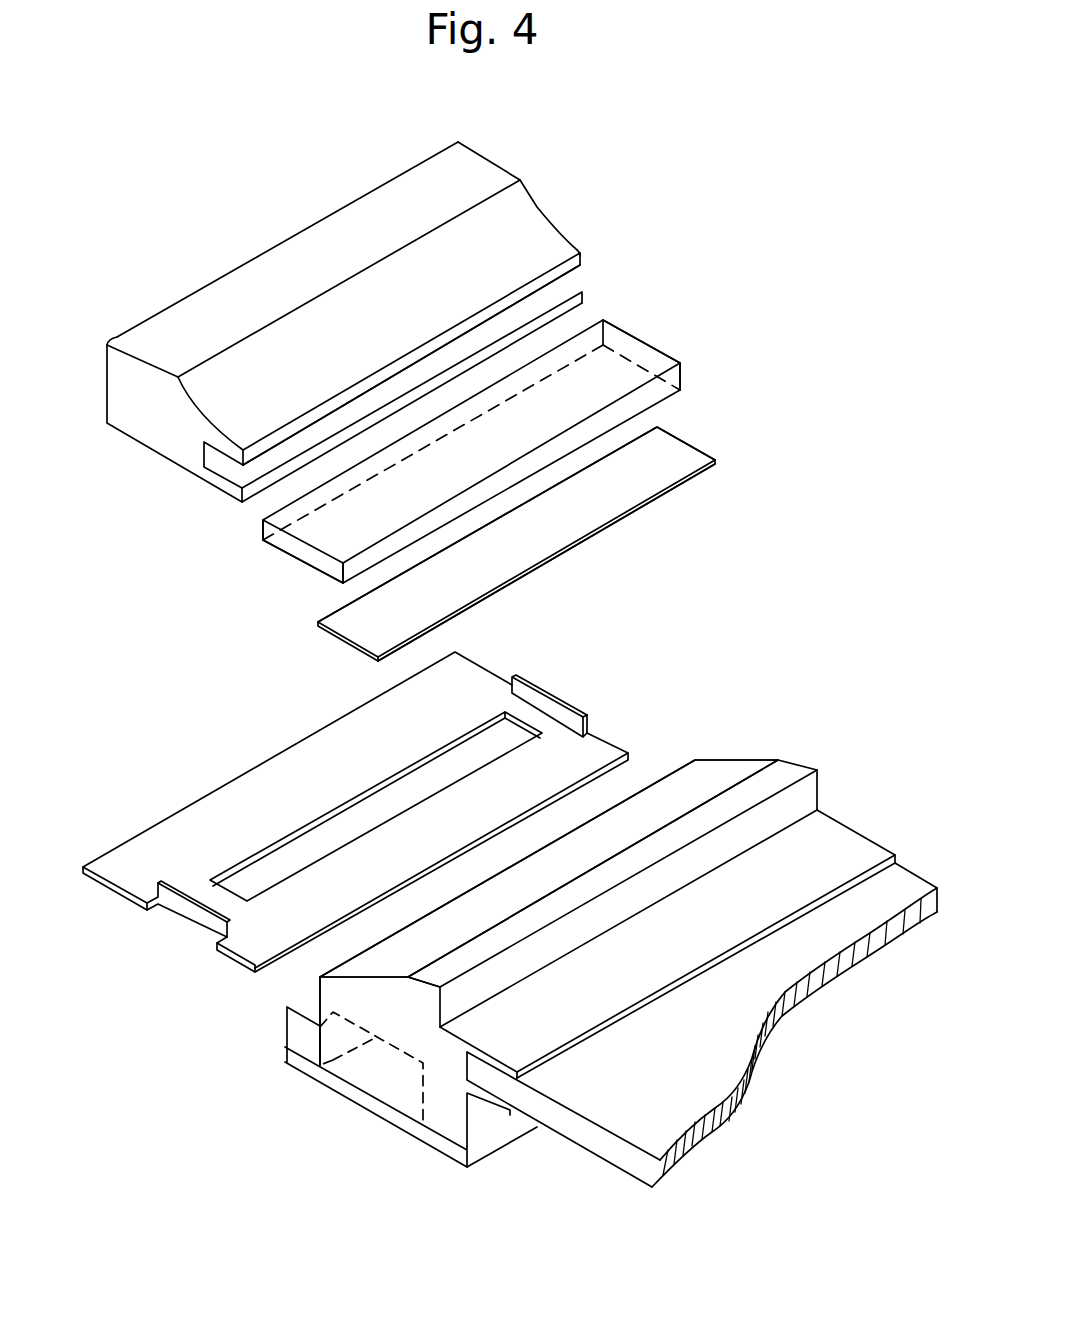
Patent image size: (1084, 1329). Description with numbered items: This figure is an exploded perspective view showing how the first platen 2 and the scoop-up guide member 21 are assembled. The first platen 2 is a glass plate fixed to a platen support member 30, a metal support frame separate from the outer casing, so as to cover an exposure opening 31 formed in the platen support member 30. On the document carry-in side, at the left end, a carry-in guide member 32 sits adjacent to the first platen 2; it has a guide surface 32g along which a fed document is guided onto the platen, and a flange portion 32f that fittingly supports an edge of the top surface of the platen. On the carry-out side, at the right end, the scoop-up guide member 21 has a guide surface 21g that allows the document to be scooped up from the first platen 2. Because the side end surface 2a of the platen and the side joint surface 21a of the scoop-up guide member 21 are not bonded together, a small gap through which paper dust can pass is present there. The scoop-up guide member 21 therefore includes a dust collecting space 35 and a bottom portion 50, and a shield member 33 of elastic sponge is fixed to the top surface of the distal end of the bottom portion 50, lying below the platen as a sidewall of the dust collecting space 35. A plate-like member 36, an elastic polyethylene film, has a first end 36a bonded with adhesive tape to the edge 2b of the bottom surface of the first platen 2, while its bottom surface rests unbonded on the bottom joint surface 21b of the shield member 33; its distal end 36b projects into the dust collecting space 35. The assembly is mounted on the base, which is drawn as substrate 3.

The first platen 2 is at (493, 435).
The side end surface 2a is at (680, 392).
The edge of the bottom surface 2b is at (327, 572).
The substrate plate 3 is at (680, 1118).
The scoop-up guide member 21 is at (528, 931).
The side joint surface 21a is at (320, 977).
The bottom joint surface 21b is at (320, 1015).
The guide surface 21g is at (715, 772).
The platen support member 30 is at (355, 812).
The exposure opening 31 is at (316, 840).
The carry-in guide member 32 is at (380, 322).
The flange portion 32f is at (583, 278).
The guide surface 32g is at (518, 240).
The shield member 33 is at (287, 1007).
The dust collecting space 35 is at (388, 1073).
The plate-like member 36 is at (507, 529).
The first end 36a is at (653, 437).
The distal end 36b is at (683, 472).
The bottom portion 50 is at (287, 1060).